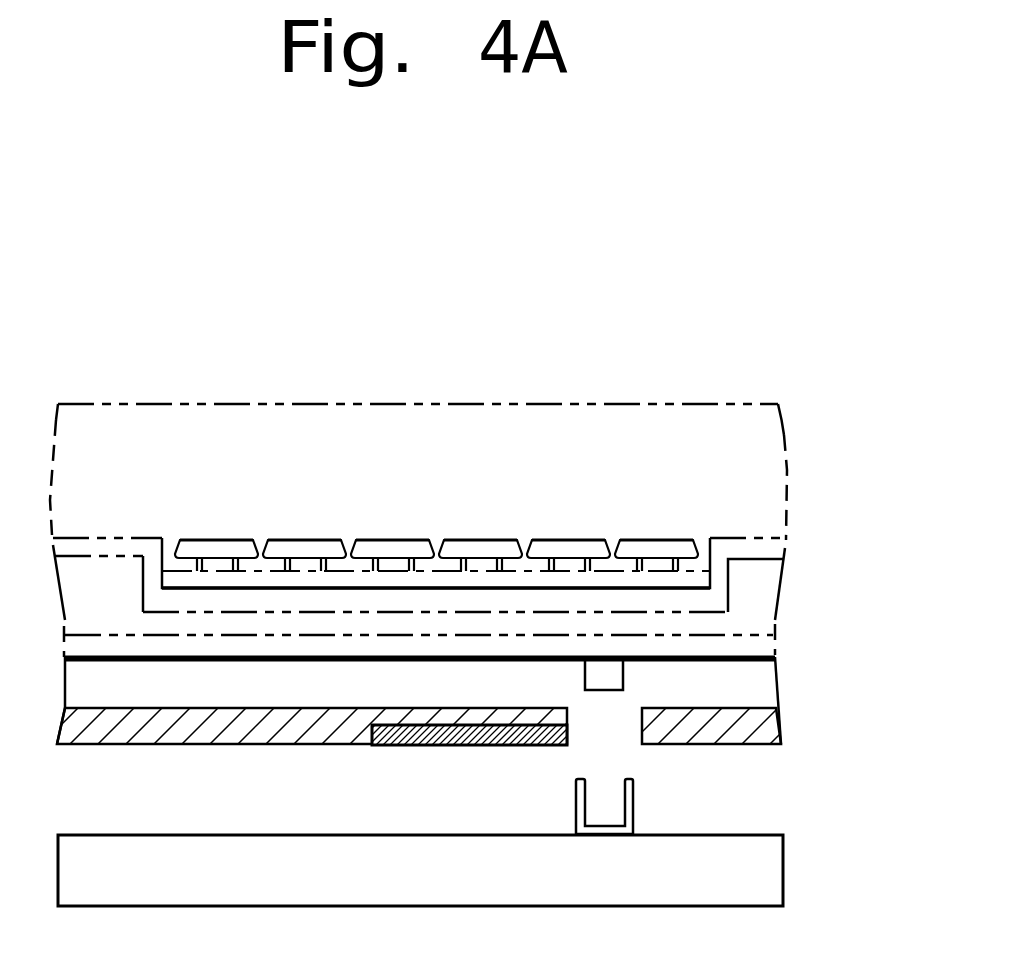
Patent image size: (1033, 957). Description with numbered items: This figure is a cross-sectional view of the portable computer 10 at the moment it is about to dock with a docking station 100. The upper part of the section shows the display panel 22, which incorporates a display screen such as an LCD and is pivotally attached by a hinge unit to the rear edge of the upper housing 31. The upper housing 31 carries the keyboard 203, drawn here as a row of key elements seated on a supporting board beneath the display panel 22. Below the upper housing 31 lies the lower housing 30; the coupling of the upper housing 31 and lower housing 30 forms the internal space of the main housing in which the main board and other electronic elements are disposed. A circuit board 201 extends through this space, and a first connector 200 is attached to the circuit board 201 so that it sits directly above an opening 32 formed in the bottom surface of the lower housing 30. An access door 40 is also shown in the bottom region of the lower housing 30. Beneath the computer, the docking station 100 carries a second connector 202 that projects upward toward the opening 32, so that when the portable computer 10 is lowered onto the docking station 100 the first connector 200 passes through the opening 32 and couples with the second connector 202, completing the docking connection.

The portable computer 10 is at (238, 309).
The display panel 22 is at (565, 403).
The keyboard 203 is at (683, 547).
The upper housing 31 is at (763, 602).
The circuit board 201 is at (755, 654).
The first connector 200 is at (623, 676).
The lower housing 30 is at (210, 732).
The access door 40 is at (447, 737).
The opening 32 is at (607, 737).
The second connector 202 is at (633, 803).
The docking station 100 is at (783, 868).